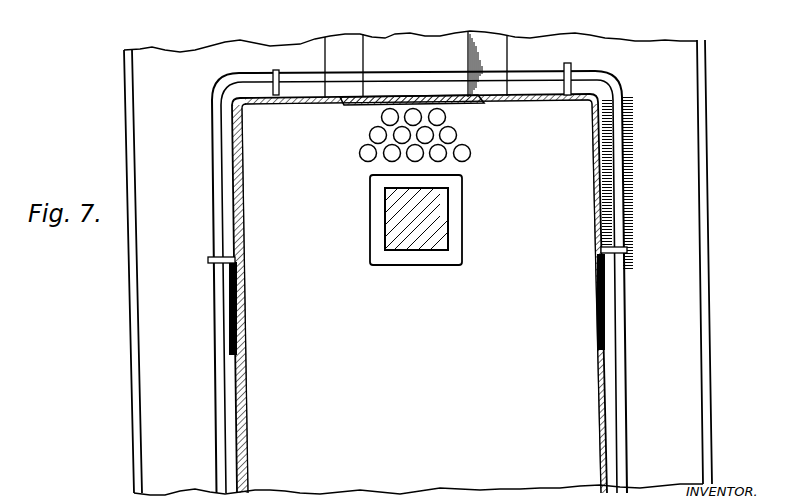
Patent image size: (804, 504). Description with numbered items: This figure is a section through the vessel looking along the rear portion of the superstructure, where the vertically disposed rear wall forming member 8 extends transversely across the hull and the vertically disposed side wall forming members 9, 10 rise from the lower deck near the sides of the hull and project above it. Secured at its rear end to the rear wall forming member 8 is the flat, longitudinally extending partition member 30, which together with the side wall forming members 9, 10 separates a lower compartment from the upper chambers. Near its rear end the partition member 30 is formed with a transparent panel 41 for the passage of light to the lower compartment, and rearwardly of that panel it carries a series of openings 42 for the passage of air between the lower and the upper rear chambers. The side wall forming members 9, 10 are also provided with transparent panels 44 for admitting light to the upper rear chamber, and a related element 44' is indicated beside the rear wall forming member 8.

The rear wall forming member 8 is at (532, 100).
The side wall forming member 9 is at (233, 202).
The side wall forming member 10 is at (604, 372).
The partition member 30 is at (421, 296).
The transparent panel 41 is at (437, 203).
The openings 42 is at (452, 135).
The transparent panels 44 is at (416, 209).
The top bar 44' is at (400, 115).